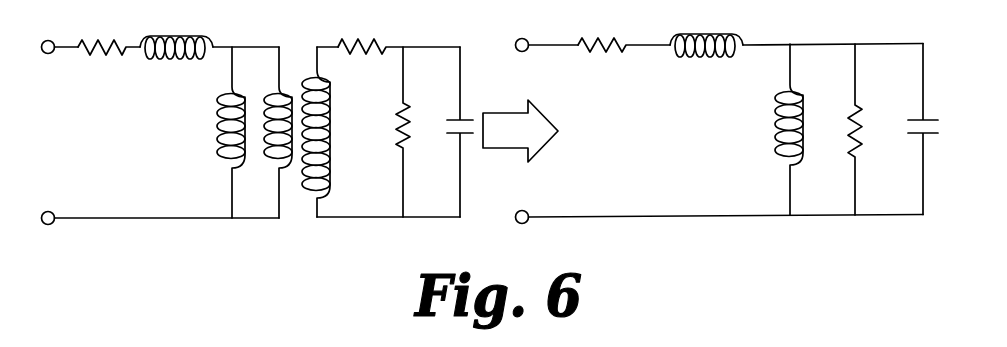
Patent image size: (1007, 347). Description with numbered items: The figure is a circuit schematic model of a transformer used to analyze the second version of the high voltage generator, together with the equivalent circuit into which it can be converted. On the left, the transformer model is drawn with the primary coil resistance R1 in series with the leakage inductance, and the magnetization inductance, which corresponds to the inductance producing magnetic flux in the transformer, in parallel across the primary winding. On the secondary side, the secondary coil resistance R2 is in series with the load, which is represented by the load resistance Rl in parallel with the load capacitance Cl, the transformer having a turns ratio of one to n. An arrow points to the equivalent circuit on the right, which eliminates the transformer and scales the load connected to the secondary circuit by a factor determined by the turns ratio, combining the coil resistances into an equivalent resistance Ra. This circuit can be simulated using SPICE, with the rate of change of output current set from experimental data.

The primary coil resistance R1 is at (109, 63).
The secondary coil resistance R2 is at (399, 62).
The load resistance Rl is at (388, 132).
The load capacitance Cl is at (447, 132).
The equivalent series resistance Ra is at (613, 74).